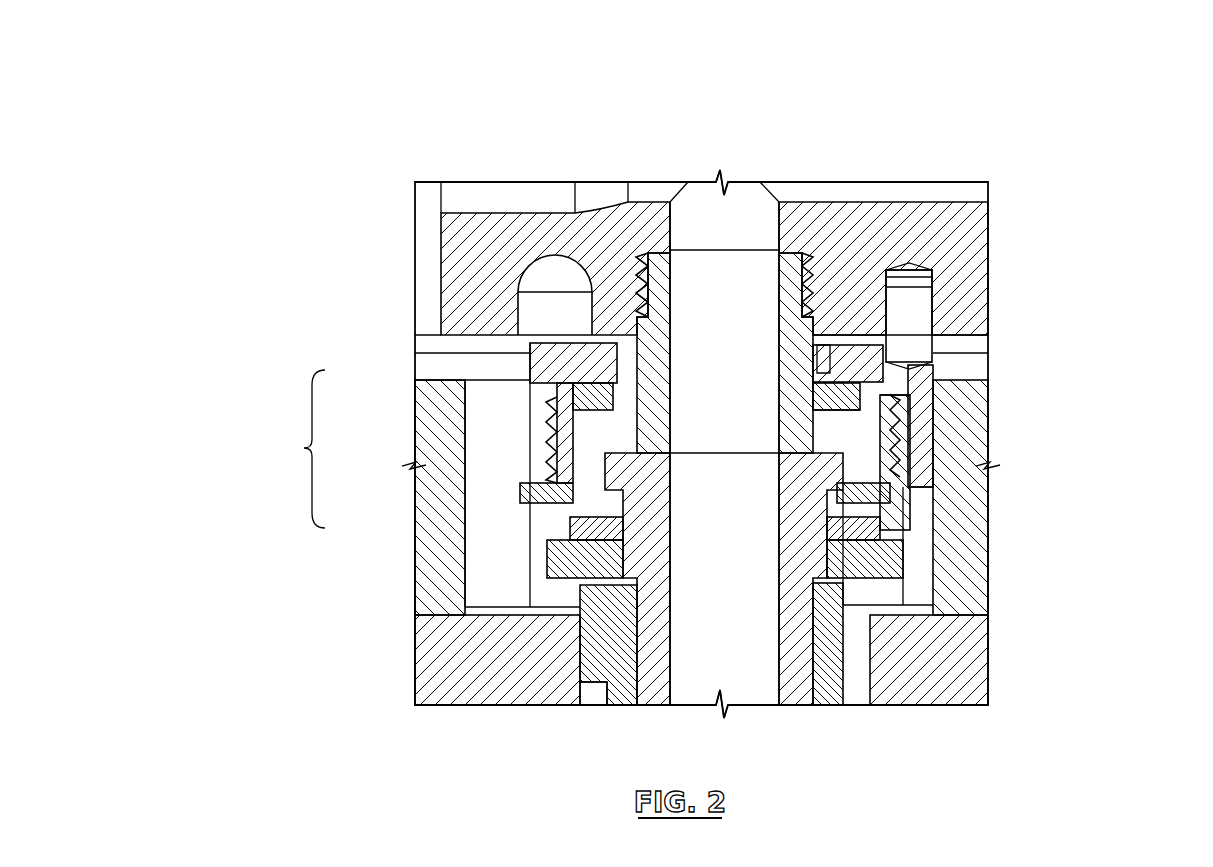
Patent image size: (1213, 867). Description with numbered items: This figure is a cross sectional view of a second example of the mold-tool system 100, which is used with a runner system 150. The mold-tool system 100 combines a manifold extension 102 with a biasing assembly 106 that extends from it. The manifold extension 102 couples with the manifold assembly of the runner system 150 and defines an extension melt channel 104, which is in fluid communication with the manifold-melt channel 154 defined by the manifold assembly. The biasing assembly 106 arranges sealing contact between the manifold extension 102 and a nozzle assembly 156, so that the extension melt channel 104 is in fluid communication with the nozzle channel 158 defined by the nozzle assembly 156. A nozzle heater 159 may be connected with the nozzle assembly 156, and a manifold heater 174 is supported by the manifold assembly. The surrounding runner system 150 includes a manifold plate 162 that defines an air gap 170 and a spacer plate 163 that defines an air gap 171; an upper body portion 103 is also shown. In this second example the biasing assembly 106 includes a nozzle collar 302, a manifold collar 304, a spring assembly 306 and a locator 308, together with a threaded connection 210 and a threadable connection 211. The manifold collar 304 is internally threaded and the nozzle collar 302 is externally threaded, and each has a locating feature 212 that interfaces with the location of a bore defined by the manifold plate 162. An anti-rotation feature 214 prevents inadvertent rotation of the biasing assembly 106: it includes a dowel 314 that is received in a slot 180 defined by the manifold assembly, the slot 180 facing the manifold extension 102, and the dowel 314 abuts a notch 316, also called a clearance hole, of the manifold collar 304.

The mold-tool system 100 is at (591, 113).
The manifold extension 102 is at (645, 252).
The upper body portion 103 is at (975, 245).
The extension melt channel 104 is at (706, 270).
The biasing assembly 106 is at (287, 449).
The runner system 150 is at (1126, 232).
The manifold-melt channel 154 is at (742, 212).
The nozzle assembly 156 is at (800, 688).
The nozzle channel 158 is at (742, 687).
The nozzle heater 159 is at (620, 688).
The manifold plate 162 is at (425, 533).
The spacer plate 163 is at (985, 655).
The air gap 170 is at (480, 585).
The air gap 171 is at (590, 694).
The manifold heater 174 is at (545, 268).
The slot 180 is at (935, 308).
The threaded connection 210 is at (935, 412).
The threadable connection 211 is at (806, 262).
The locating feature 212 is at (912, 408).
The anti-rotation feature 214 is at (945, 111).
The nozzle collar 302 is at (575, 548).
The manifold collar 304 is at (527, 358).
The spring assembly 306 is at (565, 530).
The locator 308 is at (556, 503).
The dowel 314 is at (907, 298).
The notch 316 is at (912, 374).